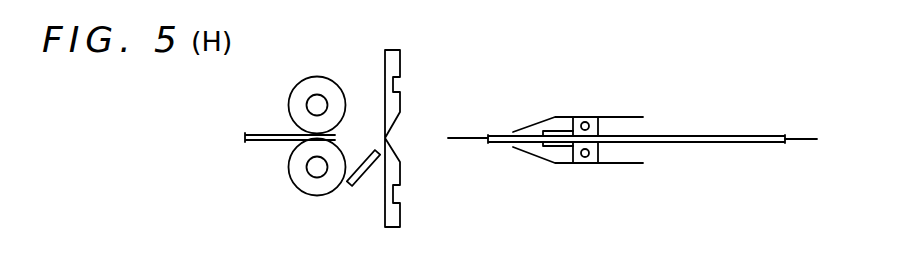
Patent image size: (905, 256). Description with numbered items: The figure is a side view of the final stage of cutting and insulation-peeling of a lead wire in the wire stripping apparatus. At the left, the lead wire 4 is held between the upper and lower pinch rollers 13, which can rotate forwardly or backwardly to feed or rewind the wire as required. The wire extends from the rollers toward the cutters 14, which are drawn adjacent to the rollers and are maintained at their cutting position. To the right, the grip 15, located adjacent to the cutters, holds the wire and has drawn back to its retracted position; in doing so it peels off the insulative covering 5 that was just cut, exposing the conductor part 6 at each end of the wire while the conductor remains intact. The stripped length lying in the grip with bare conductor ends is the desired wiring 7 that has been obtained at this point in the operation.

The lead wire 4 is at (267, 132).
The insulative covering 5 is at (358, 188).
The conductor part 6 is at (457, 141).
The wiring 7 is at (694, 134).
The pinch rollers 13 is at (306, 79).
The cutters 14 is at (399, 56).
The grip 15 is at (573, 117).